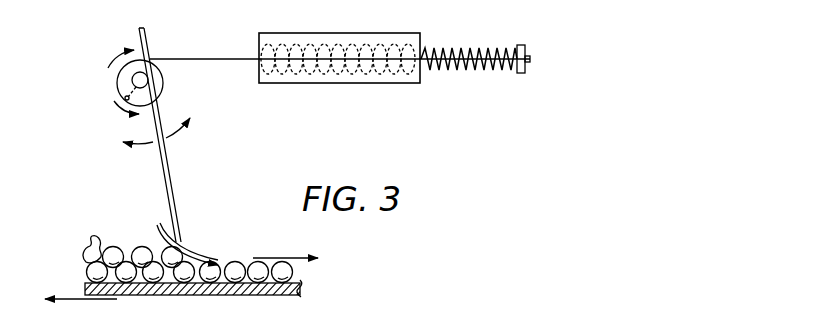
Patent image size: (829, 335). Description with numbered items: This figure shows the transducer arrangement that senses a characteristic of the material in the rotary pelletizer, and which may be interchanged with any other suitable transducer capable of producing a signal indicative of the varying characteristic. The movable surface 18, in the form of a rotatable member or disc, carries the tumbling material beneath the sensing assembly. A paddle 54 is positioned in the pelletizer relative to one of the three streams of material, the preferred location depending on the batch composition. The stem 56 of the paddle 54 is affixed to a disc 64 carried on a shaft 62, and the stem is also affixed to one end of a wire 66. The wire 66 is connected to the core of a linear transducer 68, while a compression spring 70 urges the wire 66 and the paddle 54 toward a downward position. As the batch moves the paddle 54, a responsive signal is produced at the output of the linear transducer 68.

The movable surface 18 is at (115, 262).
The paddle 54 is at (157, 229).
The stem 56 is at (168, 170).
The shaft 62 is at (132, 81).
The disc 64 is at (126, 97).
The wire 66 is at (226, 58).
The linear transducer 68 is at (335, 33).
The compression spring 70 is at (478, 45).